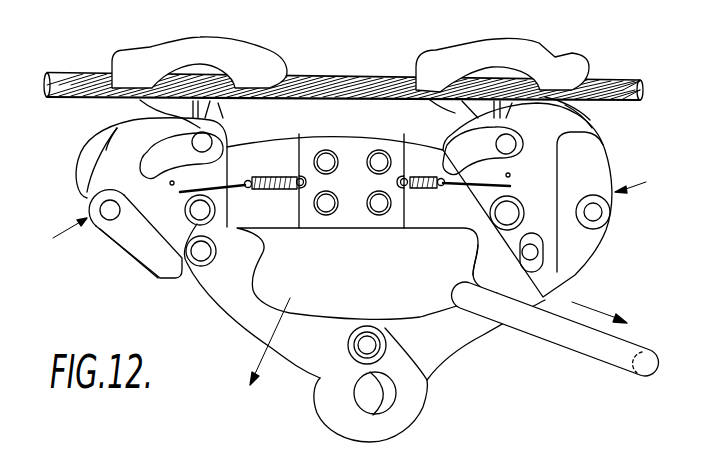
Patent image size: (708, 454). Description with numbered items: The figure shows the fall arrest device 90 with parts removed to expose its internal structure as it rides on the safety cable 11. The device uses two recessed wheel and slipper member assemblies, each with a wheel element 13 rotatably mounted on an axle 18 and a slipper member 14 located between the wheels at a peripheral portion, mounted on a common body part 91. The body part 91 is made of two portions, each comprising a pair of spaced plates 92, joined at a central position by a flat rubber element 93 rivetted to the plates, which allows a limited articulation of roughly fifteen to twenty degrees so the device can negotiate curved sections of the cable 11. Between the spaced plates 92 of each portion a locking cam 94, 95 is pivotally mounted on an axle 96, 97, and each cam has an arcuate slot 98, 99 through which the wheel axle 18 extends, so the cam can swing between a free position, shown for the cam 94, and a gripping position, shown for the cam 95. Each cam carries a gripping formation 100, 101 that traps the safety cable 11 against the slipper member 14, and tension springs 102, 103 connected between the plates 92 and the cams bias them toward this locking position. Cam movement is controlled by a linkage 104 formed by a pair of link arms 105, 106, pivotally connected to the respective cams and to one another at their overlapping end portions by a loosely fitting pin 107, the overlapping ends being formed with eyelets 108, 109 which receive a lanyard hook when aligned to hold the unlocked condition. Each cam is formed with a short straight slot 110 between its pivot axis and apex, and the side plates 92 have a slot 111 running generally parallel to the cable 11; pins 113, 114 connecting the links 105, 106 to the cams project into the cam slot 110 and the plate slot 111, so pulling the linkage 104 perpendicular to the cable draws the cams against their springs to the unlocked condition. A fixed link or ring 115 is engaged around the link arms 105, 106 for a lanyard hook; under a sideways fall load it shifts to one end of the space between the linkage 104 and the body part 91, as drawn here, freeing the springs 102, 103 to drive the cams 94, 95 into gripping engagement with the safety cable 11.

The safety cable 11 is at (80, 72).
The wheel element 13 is at (162, 112).
The slipper member 14 is at (160, 53).
The axle 18 is at (205, 133).
The fall arrest device 90 is at (641, 182).
The body part 91 is at (60, 234).
The spaced plates 92 is at (113, 228).
The flat rubber element 93 is at (356, 150).
The locking cam 94 is at (107, 167).
The locking cam 95 is at (540, 157).
The axle 96 is at (182, 272).
The axle 97 is at (512, 215).
The arcuate slot 98 is at (145, 141).
The arcuate slot 99 is at (572, 121).
The gripping formation 100 is at (87, 192).
The gripping formation 101 is at (565, 110).
The tension spring 102 is at (256, 177).
The tension spring 103 is at (423, 193).
The linkage 104 is at (467, 370).
The link arm 105 is at (245, 327).
The link arm 106 is at (482, 335).
The pin 107 is at (367, 343).
The eyelet 108 is at (397, 405).
The eyelet 109 is at (386, 393).
The short straight slot 110 is at (539, 267).
The slot 111 is at (155, 258).
The pin 113 is at (200, 268).
The pin 114 is at (474, 269).
The fixed link or ring 115 is at (575, 342).